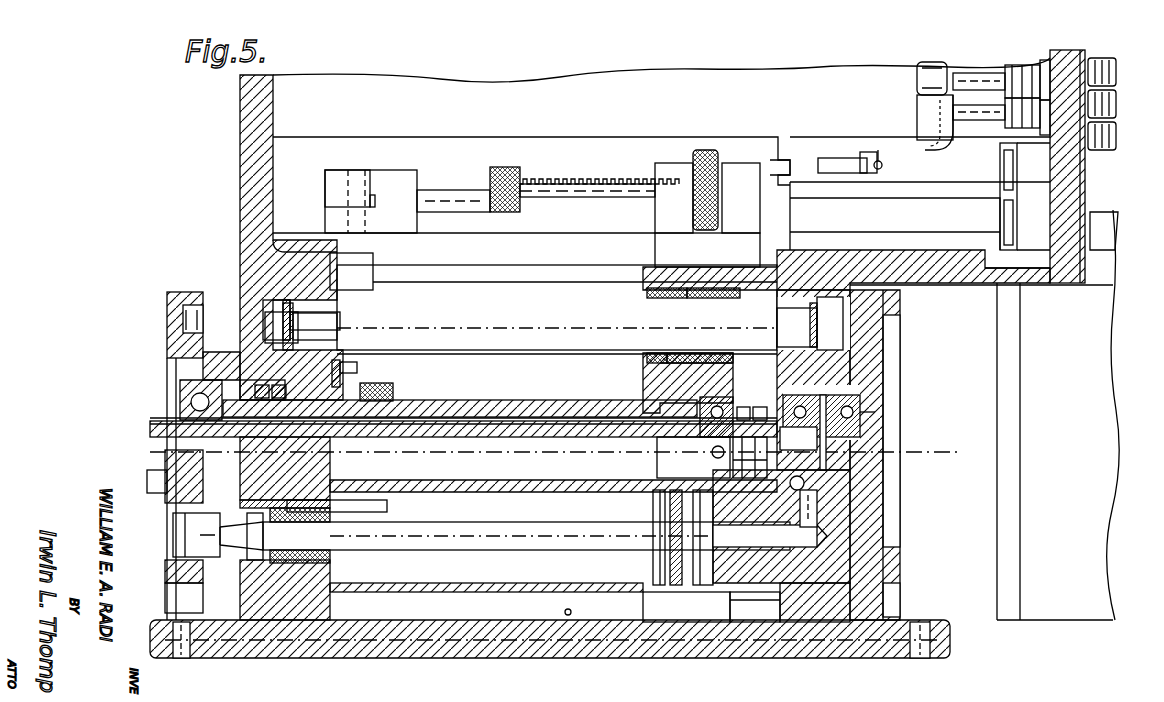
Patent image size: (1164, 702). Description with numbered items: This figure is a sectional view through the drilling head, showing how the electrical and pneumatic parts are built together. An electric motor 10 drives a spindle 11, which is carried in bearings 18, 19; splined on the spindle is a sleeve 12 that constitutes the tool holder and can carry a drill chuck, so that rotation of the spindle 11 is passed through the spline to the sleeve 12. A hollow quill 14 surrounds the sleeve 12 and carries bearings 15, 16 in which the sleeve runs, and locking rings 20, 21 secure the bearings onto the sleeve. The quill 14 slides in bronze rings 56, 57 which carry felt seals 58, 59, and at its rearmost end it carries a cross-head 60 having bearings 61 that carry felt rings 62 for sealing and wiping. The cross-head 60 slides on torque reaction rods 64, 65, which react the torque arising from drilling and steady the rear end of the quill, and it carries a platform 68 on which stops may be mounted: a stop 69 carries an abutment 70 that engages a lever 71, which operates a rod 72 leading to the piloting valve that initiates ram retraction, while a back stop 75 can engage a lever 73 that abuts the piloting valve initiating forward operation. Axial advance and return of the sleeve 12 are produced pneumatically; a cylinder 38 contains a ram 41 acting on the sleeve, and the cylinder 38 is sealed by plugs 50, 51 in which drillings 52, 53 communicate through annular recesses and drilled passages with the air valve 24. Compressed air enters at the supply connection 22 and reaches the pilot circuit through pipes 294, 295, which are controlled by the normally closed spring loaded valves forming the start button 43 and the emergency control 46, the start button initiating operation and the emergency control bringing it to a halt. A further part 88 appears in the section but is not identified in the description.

The electric motor 10 is at (984, 415).
The spindle 11 is at (460, 453).
The sleeve 12 is at (236, 438).
The hollow quill 14 is at (522, 404).
The bearing 15 is at (192, 392).
The bearing 16 is at (730, 405).
The bearing 18 is at (860, 397).
The bearing 19 is at (865, 412).
The locking ring 20 is at (712, 453).
The locking ring 21 is at (798, 438).
The connection for compressed air supply 22 is at (1103, 152).
The valve body 24 is at (920, 196).
The cylinder 38 is at (615, 596).
The ram 41 is at (500, 550).
The start button 43 is at (1103, 60).
The emergency control 46 is at (1066, 62).
The plug 50 is at (272, 578).
The plug 51 is at (817, 570).
The drilling 52 is at (388, 506).
The drilling 53 is at (818, 500).
The bronze ring 56 is at (240, 372).
The bronze ring 57 is at (393, 392).
The felt seal 58 is at (258, 378).
The felt seal 59 is at (377, 384).
The cross-head 60 is at (643, 382).
The bearing 61 is at (665, 355).
The felt ring 62 is at (653, 355).
The torque reaction rod 64 is at (554, 303).
The torque reaction rod 65 is at (566, 608).
The platform 68 is at (706, 275).
The stop 69 is at (672, 175).
The abutment 70 is at (515, 170).
The lever 71 is at (337, 185).
The rod 72 is at (452, 195).
The lever 73 is at (838, 158).
The back stop 75 is at (783, 158).
The pin 88 is at (877, 158).
The pipe 294 is at (980, 74).
The pipe 295 is at (987, 122).